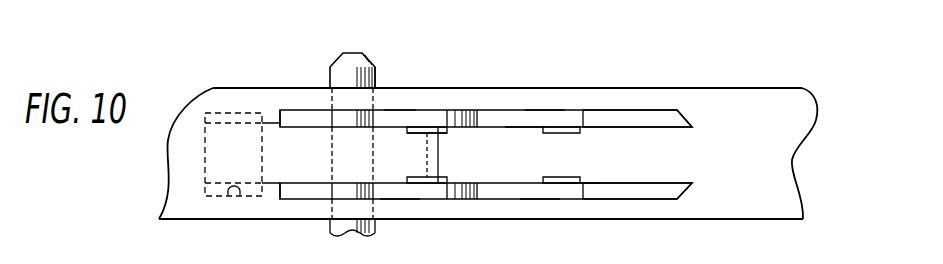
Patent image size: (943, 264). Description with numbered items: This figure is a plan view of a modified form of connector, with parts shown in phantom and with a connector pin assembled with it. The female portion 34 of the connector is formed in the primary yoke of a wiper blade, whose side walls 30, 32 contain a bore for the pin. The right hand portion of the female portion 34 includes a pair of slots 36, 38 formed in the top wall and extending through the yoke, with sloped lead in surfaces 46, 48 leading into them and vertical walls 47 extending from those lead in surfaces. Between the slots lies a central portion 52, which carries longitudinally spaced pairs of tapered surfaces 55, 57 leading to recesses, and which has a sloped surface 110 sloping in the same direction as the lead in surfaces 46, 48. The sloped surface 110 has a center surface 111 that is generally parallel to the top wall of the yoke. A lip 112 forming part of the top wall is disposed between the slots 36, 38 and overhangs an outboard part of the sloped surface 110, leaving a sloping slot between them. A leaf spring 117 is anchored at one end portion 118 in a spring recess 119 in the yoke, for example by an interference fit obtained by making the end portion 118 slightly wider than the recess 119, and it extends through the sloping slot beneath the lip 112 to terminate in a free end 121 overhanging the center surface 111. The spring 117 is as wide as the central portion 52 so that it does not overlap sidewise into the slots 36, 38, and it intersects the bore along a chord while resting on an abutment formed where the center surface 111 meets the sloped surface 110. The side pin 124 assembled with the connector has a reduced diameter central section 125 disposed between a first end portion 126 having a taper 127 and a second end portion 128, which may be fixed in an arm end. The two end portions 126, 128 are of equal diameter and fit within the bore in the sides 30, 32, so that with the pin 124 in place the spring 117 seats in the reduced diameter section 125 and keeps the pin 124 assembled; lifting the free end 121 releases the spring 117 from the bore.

The side wall 30 is at (593, 88).
The side wall 32 is at (518, 219).
The female portion 34 is at (757, 100).
The slot 36 is at (430, 143).
The slot 38 is at (393, 188).
The sloped lead-in surface 46 is at (643, 122).
The vertical wall 47 is at (573, 190).
The sloped lead-in surface 48 is at (660, 190).
The central portion 52 is at (543, 155).
The tapered surface 55 is at (412, 133).
The tapered surface 57 is at (567, 132).
The sloped surface 110 is at (542, 127).
The center surface 111 is at (523, 140).
The lip 112 is at (305, 140).
The leaf spring 117 is at (452, 145).
The end portion 118 is at (215, 170).
The spring recess 119 is at (237, 196).
The free end 121 is at (440, 156).
The side pin 124 is at (384, 130).
The reduced diameter central section 125 is at (400, 118).
The first end portion 126 is at (342, 78).
The taper 127 is at (379, 73).
The second end portion 128 is at (332, 228).